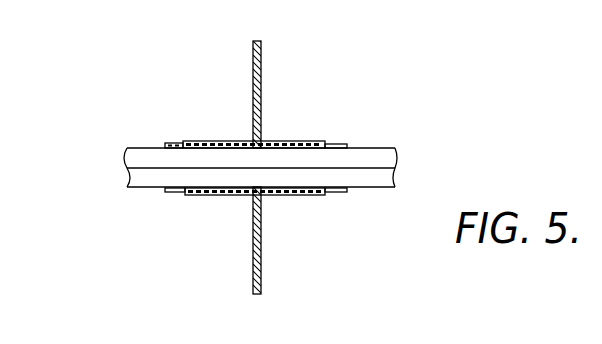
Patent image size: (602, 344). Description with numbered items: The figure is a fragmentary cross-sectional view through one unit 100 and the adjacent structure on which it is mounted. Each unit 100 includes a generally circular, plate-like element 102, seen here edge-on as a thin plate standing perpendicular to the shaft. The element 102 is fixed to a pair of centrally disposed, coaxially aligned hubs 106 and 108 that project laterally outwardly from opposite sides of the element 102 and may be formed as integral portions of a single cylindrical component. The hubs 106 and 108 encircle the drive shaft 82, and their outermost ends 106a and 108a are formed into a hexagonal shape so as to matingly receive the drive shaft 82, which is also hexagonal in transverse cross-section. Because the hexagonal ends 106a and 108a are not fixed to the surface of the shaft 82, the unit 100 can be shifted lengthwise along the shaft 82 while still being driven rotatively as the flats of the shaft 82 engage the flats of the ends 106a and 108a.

The drive shaft 82 is at (385, 172).
The unit 100 is at (268, 88).
The plate-like element 102 is at (253, 82).
The hub 106 is at (228, 196).
The outermost end of hub 106a is at (181, 142).
The hub 108 is at (292, 140).
The outermost end of hub 108a is at (345, 196).